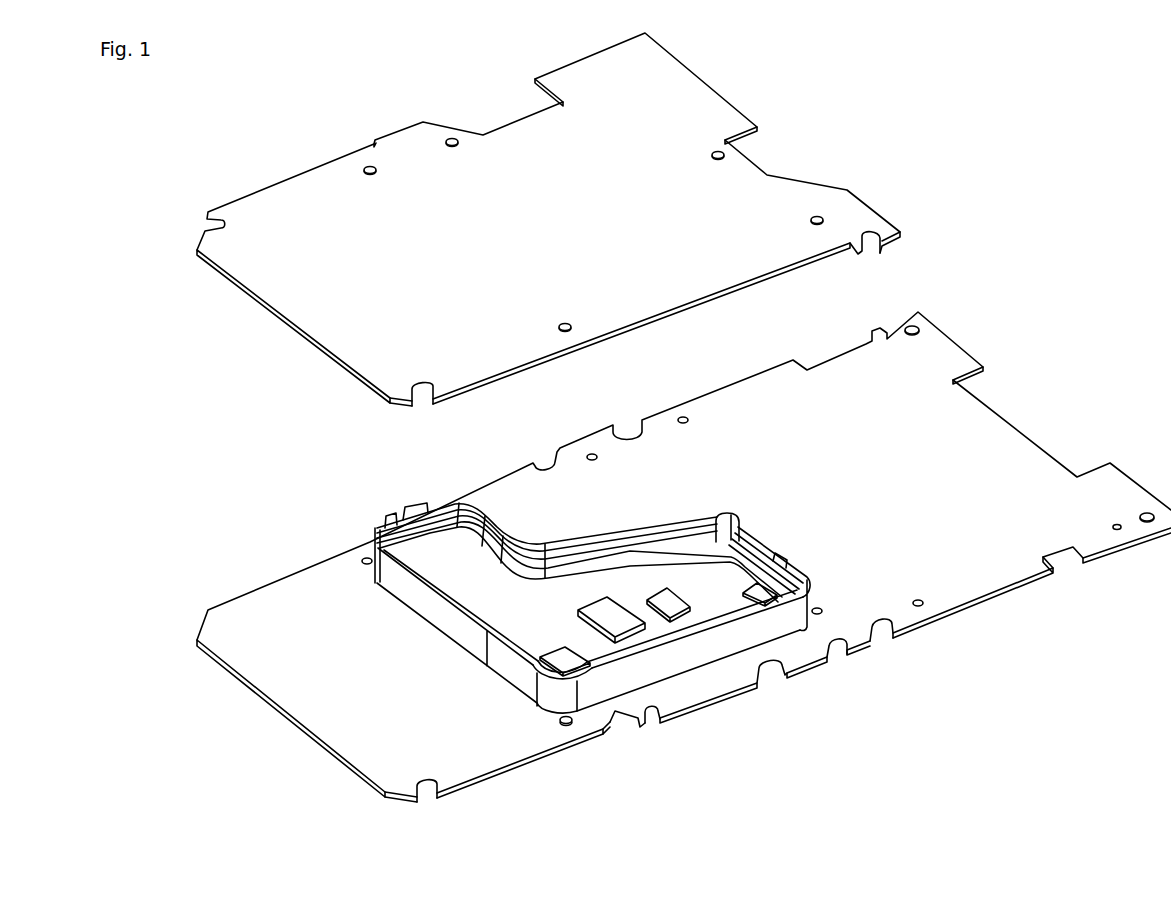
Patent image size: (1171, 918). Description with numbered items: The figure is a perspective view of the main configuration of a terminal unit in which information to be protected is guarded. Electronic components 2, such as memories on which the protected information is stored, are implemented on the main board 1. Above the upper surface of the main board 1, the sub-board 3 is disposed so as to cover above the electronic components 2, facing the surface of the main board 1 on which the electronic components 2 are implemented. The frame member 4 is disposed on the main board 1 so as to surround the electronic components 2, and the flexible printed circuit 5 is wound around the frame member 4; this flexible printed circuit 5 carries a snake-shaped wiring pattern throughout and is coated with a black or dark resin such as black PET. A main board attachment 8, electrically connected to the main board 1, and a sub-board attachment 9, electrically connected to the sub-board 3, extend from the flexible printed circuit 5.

The main board 1 is at (1020, 452).
The electronic components 2 is at (622, 622).
The sub-board 3 is at (762, 185).
The frame member 4 is at (458, 510).
The flexible printed circuit 5 is at (461, 630).
The main board attachment 8 is at (762, 593).
The sub-board attachment 9 is at (554, 660).